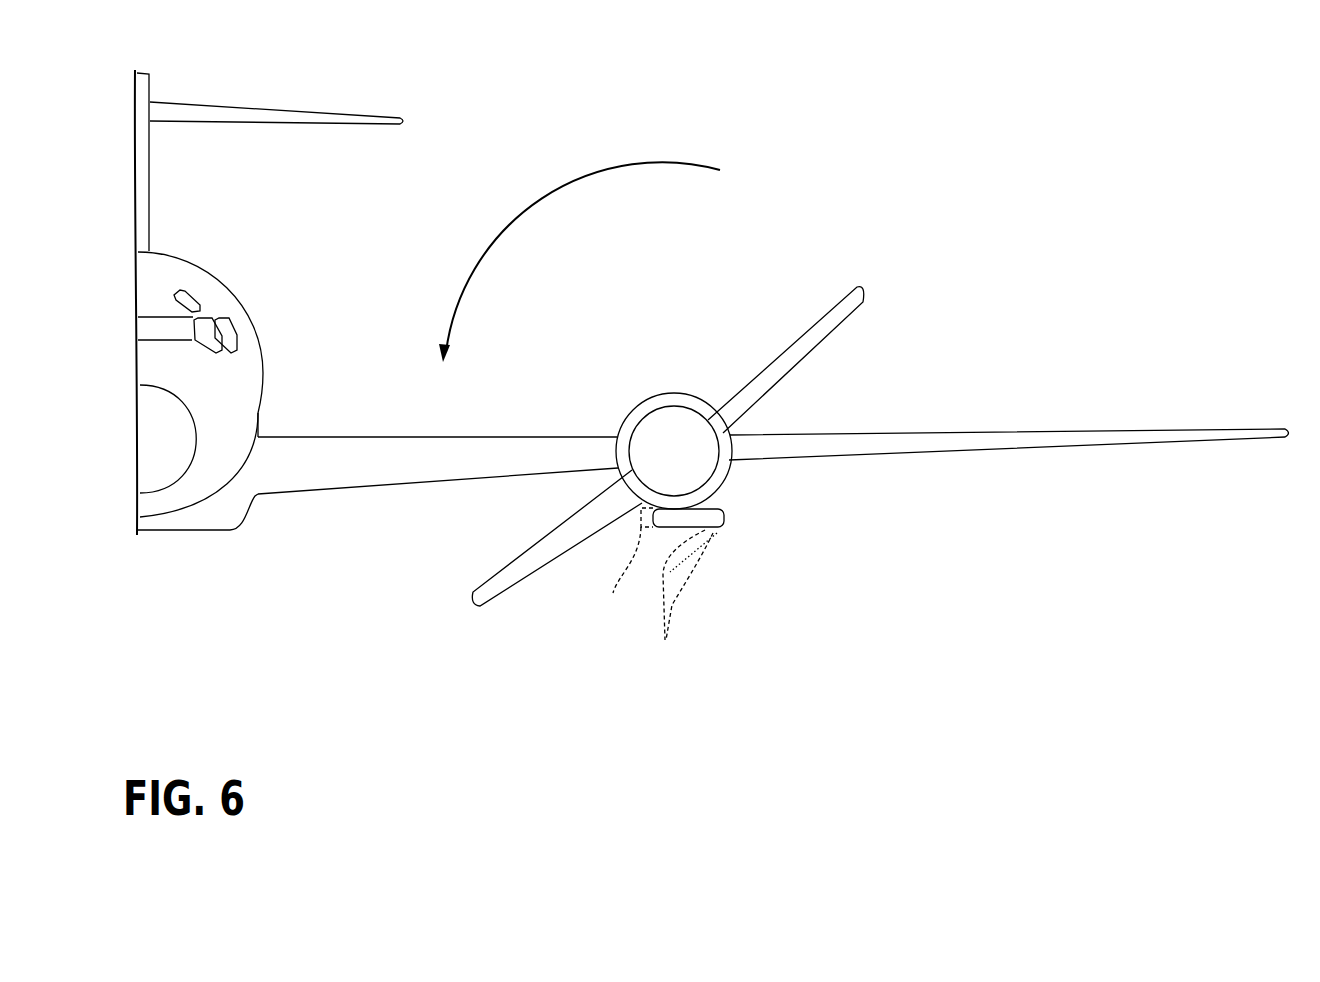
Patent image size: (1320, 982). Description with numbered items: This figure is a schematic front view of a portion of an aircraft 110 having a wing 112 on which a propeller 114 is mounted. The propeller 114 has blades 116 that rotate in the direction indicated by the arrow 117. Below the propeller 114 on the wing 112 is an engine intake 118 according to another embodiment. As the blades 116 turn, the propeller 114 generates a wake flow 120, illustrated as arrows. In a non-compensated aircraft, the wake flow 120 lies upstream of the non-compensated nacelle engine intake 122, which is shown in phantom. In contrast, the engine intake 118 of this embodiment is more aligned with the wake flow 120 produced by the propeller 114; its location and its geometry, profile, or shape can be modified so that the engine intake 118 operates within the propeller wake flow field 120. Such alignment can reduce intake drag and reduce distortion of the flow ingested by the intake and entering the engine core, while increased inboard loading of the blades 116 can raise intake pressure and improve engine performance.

The aircraft 110 is at (272, 331).
The wing 112 is at (1165, 430).
The propeller 114 is at (640, 406).
The blades 116 is at (828, 318).
The arrow 117 is at (541, 205).
The engine intake 118 is at (723, 520).
The wake flow 120 is at (682, 600).
The non-compensated nacelle engine intake 122 is at (624, 566).